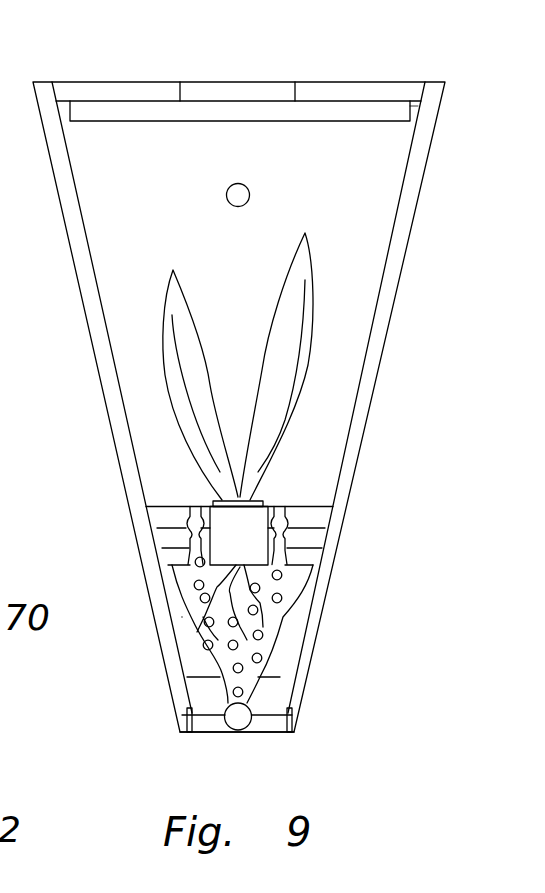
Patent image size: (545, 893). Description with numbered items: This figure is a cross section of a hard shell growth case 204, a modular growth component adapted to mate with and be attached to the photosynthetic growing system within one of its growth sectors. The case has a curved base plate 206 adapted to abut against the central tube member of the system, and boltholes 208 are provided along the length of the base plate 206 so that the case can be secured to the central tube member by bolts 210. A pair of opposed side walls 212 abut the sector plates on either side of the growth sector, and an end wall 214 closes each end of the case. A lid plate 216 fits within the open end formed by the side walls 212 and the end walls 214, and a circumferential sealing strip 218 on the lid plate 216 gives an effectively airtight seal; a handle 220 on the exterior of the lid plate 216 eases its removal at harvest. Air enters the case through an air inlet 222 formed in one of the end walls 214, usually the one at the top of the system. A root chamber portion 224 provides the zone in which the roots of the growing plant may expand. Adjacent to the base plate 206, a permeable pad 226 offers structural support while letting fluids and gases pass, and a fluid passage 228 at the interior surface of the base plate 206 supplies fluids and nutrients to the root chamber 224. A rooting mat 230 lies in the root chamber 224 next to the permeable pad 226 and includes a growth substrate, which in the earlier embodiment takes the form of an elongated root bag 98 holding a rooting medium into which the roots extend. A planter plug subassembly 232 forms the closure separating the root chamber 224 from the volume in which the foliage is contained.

The hard shell growth case 204 is at (432, 269).
The base plate 206 is at (273, 735).
The boltholes 208 is at (296, 722).
The bolts 210 is at (190, 740).
The side walls 212 is at (330, 555).
The end wall 214 is at (148, 162).
The lid plate 216 is at (313, 110).
The circumferential sealing strip 218 is at (417, 112).
The handle 220 is at (203, 92).
The aperture 222 is at (233, 203).
The root chamber portion 224 is at (303, 624).
The permeable pad 226 is at (272, 692).
The fluid passage 228 is at (240, 717).
The rooting mat 230 is at (207, 648).
The planter plug subassembly 232 is at (320, 510).
The root bag 98 is at (182, 617).